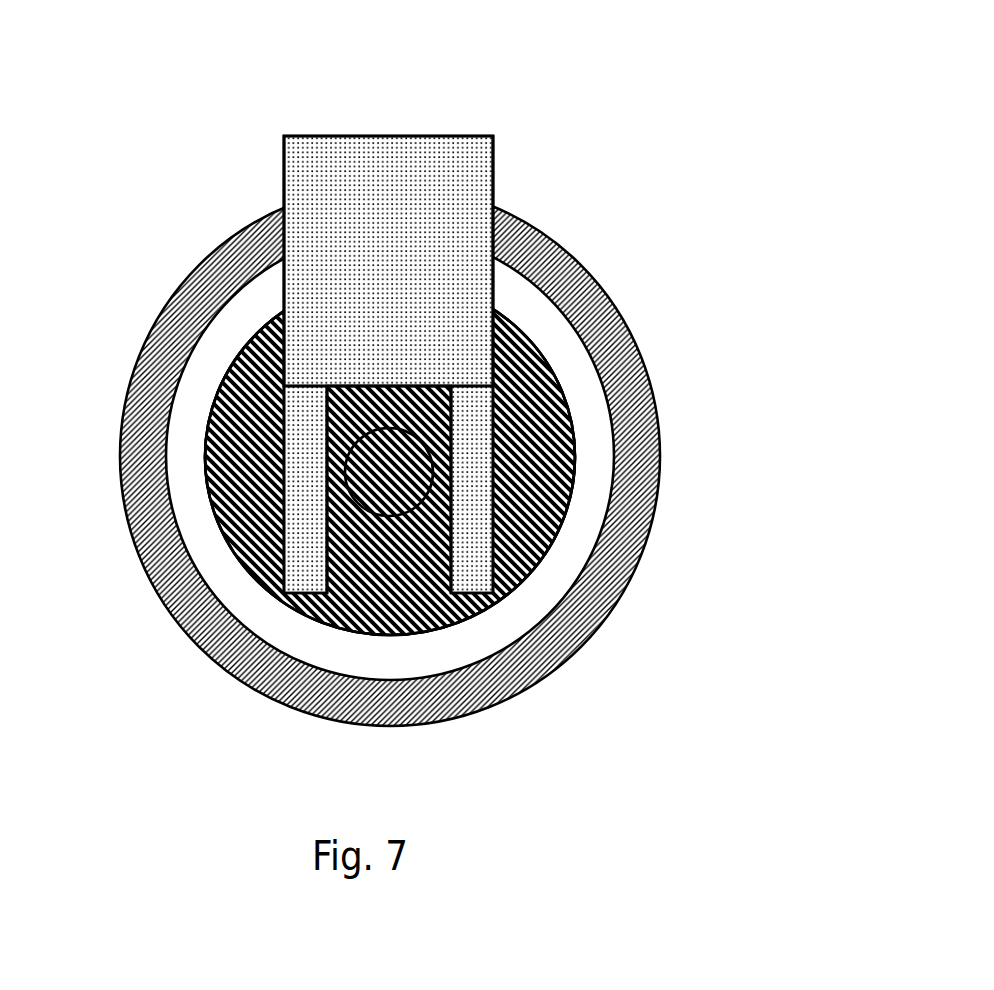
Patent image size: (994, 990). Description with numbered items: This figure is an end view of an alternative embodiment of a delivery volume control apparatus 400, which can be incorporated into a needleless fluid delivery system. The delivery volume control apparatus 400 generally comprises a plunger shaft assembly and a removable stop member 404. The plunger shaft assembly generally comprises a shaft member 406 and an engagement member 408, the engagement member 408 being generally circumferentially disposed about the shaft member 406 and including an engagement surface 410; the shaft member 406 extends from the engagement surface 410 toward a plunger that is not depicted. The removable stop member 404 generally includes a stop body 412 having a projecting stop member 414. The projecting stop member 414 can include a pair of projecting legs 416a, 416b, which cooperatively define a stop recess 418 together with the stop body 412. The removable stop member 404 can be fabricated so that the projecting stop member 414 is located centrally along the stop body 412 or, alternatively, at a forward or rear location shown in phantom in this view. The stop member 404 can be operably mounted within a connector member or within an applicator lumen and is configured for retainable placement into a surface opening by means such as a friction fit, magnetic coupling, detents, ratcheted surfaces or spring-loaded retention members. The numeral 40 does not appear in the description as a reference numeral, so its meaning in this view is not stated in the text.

The delivery volume control apparatus 400 is at (728, 139).
The removable stop member 404 is at (362, 135).
The shaft member 406 is at (410, 495).
The engagement member 408 is at (558, 456).
The engagement surface 410 is at (513, 572).
The stop body 412 is at (462, 184).
The projecting stop member 414 is at (475, 349).
The projecting leg 416a is at (300, 517).
The projecting leg 416b is at (478, 418).
The stop recess 418 is at (342, 540).
The housing element 40 is at (436, 606).